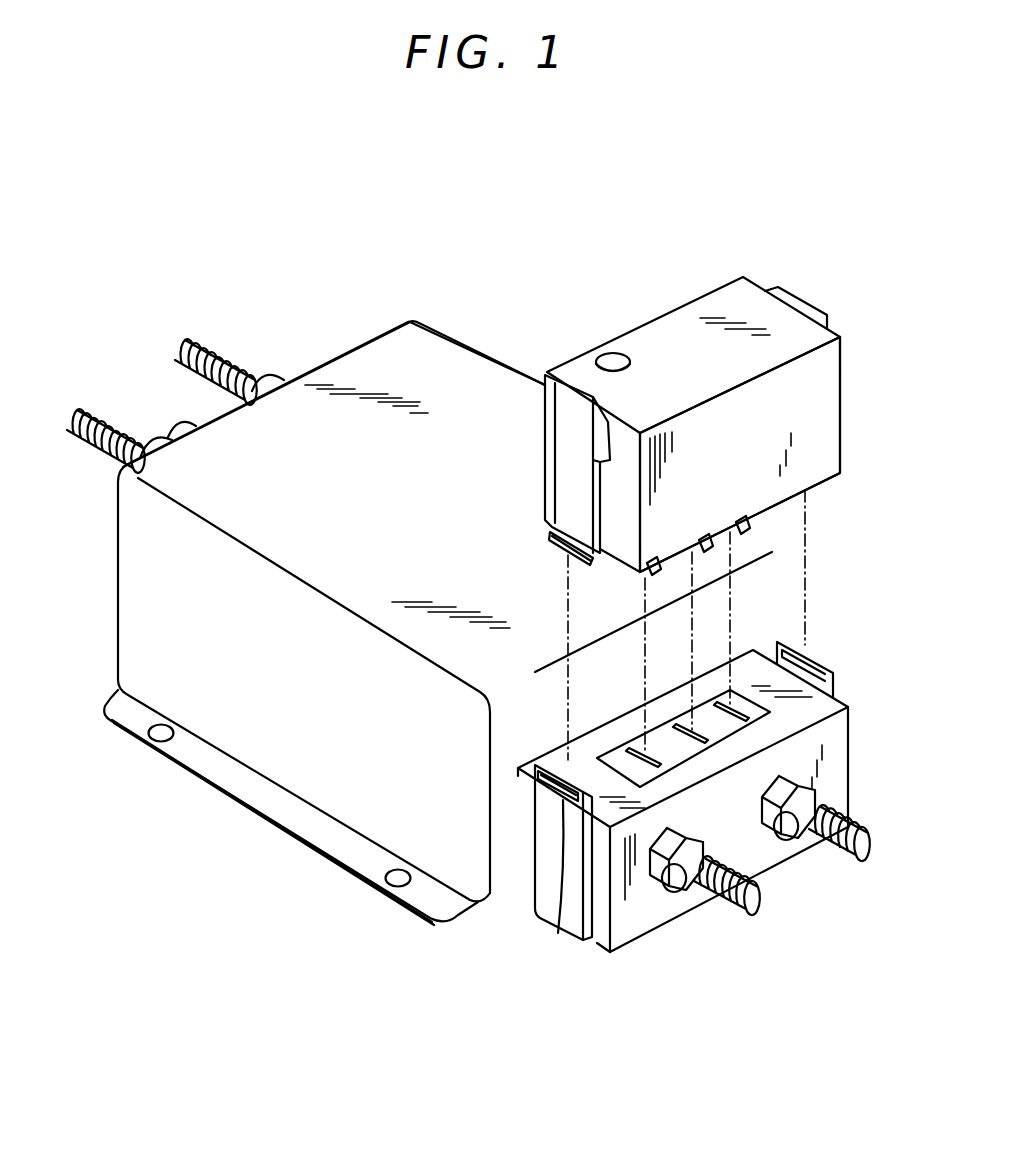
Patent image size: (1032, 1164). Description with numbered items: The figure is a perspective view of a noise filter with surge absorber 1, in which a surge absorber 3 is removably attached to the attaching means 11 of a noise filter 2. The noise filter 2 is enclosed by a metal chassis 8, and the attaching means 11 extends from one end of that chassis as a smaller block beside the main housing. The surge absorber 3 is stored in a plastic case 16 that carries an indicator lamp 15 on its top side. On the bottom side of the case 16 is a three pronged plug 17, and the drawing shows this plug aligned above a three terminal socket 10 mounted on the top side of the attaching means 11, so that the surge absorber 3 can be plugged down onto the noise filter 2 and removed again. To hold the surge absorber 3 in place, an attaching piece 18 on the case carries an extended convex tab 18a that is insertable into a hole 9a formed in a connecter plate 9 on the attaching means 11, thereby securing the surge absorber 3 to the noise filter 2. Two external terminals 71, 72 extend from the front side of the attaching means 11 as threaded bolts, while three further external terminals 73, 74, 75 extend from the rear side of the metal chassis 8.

The noise filter with surge absorber 1 is at (607, 158).
The noise filter 2 is at (380, 338).
The surge absorber 3 is at (710, 293).
The metal chassis 8 is at (203, 713).
The connecter plate 9 is at (568, 917).
The hole 9a is at (532, 880).
The three terminal socket 10 is at (686, 758).
The attaching means 11 is at (658, 913).
The indicator lamp 15 is at (614, 352).
The plastic case 16 is at (818, 403).
The three pronged plug 17 is at (712, 550).
The attaching piece 18 is at (568, 462).
The extended convex tab 18a is at (550, 540).
The external terminal 71 is at (757, 890).
The external terminal 72 is at (866, 855).
The external terminal 73 is at (74, 410).
The external terminal 74 is at (174, 425).
The external terminal 75 is at (187, 348).